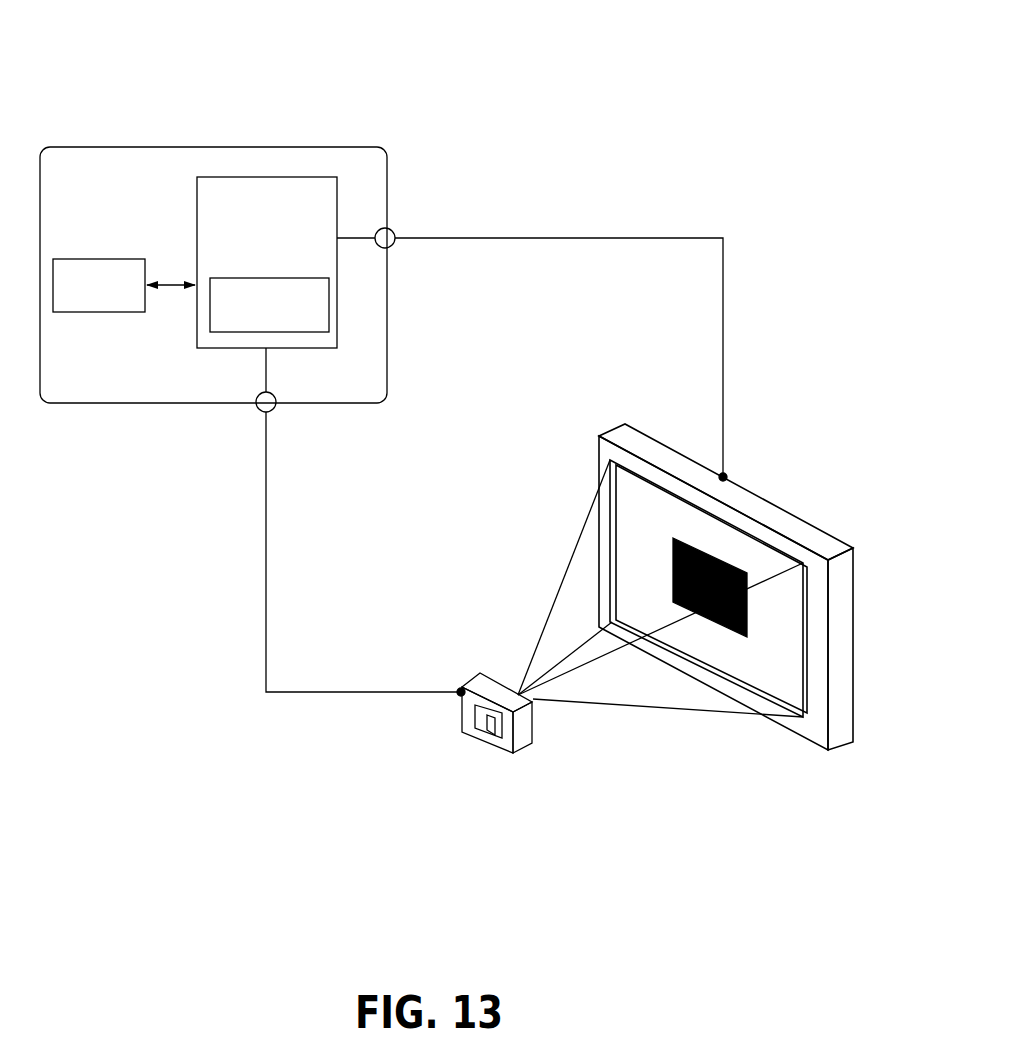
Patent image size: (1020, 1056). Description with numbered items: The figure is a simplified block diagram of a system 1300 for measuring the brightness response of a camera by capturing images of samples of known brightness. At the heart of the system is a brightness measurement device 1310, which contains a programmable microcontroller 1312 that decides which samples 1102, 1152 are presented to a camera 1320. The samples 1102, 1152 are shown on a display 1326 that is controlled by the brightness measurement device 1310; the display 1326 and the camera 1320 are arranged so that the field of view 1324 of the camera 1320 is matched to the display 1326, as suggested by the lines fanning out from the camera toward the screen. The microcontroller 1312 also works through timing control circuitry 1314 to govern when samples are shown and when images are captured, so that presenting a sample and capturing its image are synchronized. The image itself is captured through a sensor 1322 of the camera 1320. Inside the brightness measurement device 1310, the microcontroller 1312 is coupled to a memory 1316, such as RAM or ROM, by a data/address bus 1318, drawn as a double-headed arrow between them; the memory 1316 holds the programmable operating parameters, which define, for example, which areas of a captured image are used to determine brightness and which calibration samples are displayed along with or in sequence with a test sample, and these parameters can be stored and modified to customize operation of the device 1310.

The system for measuring a brightness response of a camera 1300 is at (657, 118).
The brightness measurement device 1310 is at (257, 135).
The programmable microcontroller 1312 is at (298, 214).
The timing control circuitry 1314 is at (251, 278).
The memory 1316 is at (73, 312).
The data/address bus 1318 is at (172, 284).
The camera 1320 is at (468, 740).
The sensor 1322 is at (491, 747).
The field of view 1324 is at (550, 590).
The display 1326 is at (845, 513).
The sample 1152 is at (655, 507).
The sample 1102 is at (722, 560).